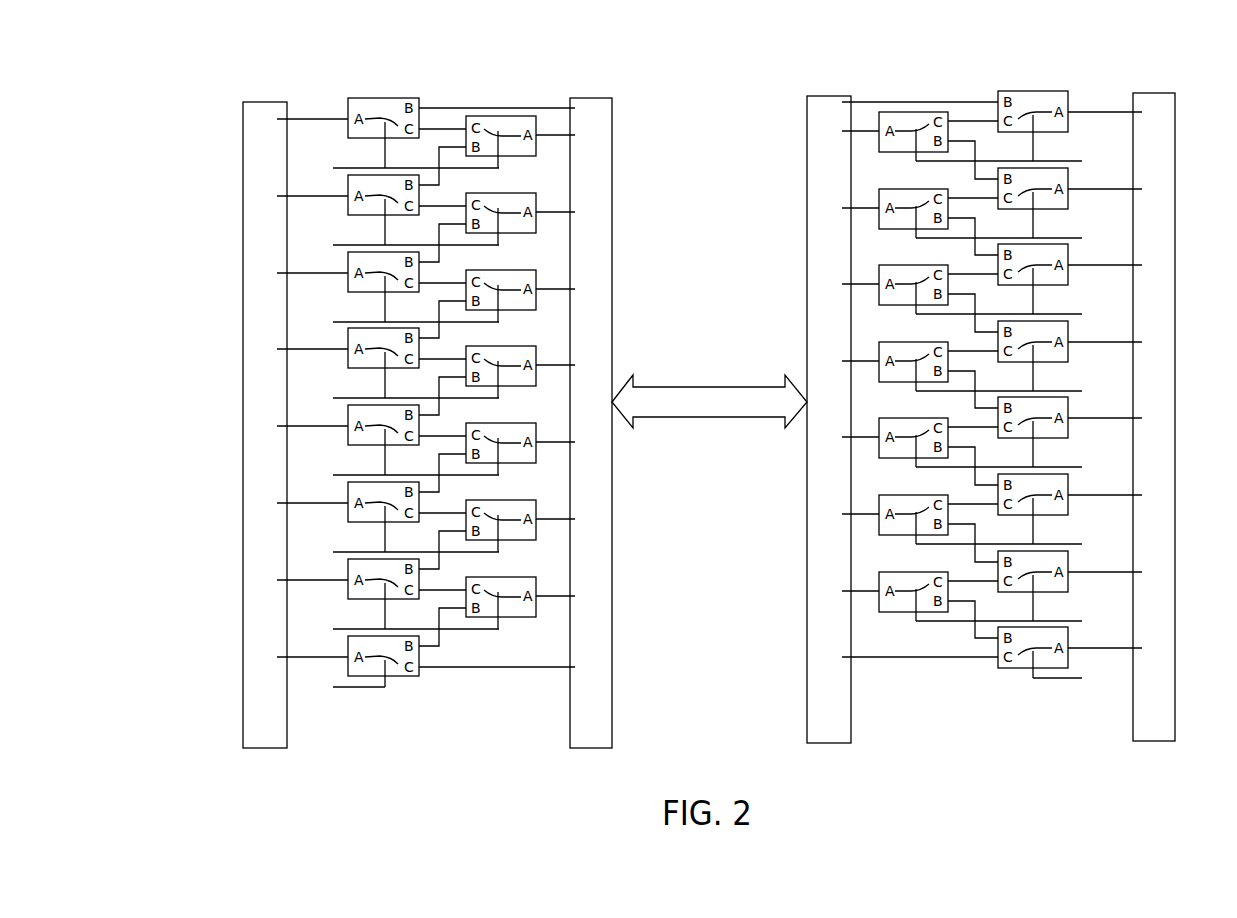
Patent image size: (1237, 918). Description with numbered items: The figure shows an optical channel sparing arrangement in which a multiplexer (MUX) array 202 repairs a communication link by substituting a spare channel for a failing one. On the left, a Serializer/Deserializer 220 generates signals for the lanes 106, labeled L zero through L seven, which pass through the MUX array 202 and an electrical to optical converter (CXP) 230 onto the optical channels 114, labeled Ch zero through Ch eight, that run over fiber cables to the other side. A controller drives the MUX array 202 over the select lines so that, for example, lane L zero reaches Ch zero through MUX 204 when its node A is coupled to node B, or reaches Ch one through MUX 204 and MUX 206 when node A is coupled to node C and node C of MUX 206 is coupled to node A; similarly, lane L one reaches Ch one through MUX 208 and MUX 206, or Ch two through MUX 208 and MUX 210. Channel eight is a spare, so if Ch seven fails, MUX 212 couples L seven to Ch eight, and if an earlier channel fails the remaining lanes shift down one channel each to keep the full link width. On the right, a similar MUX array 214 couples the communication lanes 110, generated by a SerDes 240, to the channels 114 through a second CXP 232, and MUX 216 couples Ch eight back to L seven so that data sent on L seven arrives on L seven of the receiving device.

The lanes 106 is at (265, 672).
The communication lanes 110 is at (1153, 688).
The optical channels 114 is at (697, 262).
The multiplexer (MUX) array 202 is at (375, 72).
The MUX 204 is at (350, 140).
The MUX 206 is at (505, 157).
The MUX 208 is at (350, 215).
The MUX 210 is at (505, 233).
The MUX 212 is at (400, 677).
The MUX array 214 is at (975, 72).
The MUX 216 is at (1020, 672).
The first SerDes 220 is at (243, 138).
The electrical to optical converter (CXP) 230 is at (612, 183).
The electrical to optical converter (CXP) 232 is at (807, 181).
The SerDes 240 is at (1175, 178).